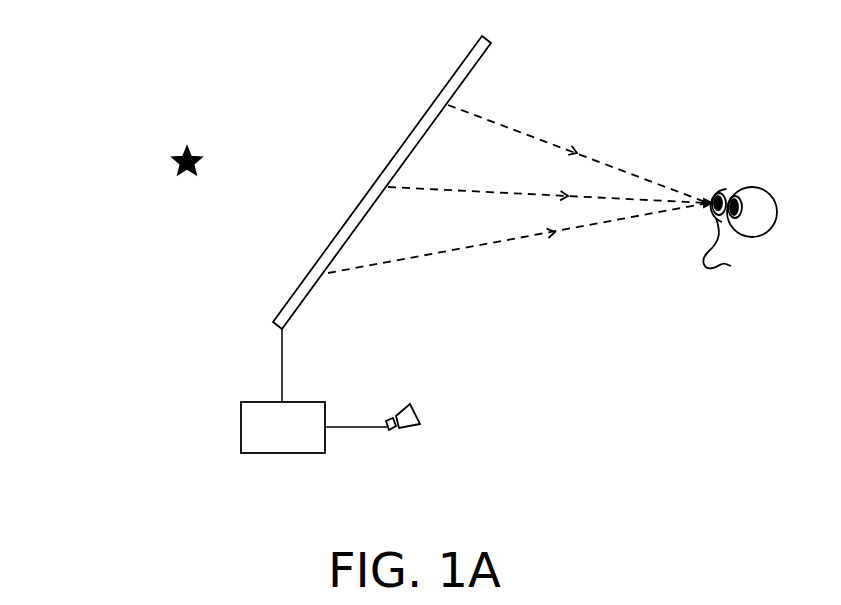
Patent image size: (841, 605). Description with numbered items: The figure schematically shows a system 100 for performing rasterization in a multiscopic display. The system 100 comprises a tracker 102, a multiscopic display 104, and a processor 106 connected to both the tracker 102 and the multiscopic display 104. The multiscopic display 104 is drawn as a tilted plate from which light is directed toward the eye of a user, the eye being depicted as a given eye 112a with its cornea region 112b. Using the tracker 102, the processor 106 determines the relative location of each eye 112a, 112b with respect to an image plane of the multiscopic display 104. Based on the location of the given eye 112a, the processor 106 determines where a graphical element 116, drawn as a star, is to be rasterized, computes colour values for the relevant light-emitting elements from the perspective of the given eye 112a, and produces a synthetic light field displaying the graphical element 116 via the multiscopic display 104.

The system 100 is at (289, 71).
The tracker 102 is at (406, 439).
The multiscopic display 104 is at (321, 208).
The processor 106 is at (283, 391).
The given eye 112a is at (757, 247).
The eye 112b is at (731, 167).
The graphical element 116 is at (118, 213).